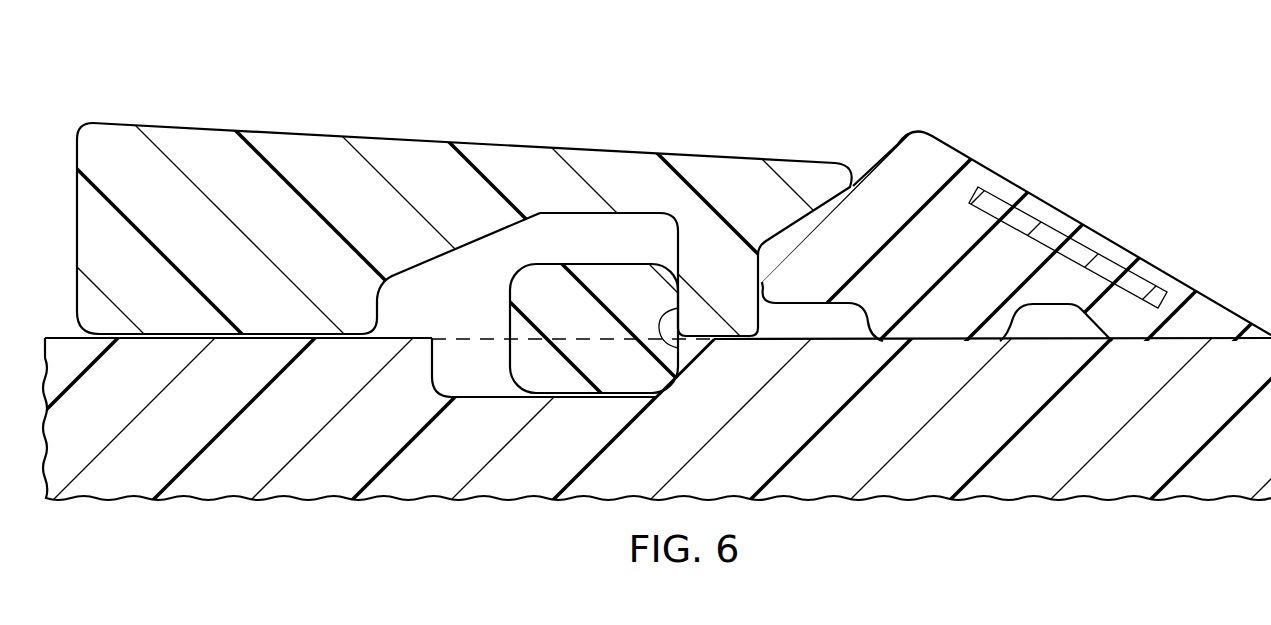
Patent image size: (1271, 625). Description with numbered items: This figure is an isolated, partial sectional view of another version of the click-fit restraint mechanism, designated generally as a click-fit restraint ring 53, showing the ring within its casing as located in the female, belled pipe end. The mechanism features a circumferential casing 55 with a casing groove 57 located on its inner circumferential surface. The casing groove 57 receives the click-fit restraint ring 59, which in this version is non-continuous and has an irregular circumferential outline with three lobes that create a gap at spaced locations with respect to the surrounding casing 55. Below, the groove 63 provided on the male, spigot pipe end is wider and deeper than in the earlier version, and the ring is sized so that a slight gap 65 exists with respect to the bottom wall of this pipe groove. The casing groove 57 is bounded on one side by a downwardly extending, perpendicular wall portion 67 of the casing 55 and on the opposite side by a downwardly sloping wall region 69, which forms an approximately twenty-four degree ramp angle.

The click-fit restraint ring 53 is at (841, 73).
The circumferential casing 55 is at (614, 312).
The casing groove 57 is at (556, 215).
The click-fit restraint ring 59 is at (517, 330).
The groove 63 is at (635, 312).
The gap 65 is at (573, 367).
The perpendicular wall portion 67 is at (683, 348).
The downwardly sloping wall region 69 is at (468, 250).